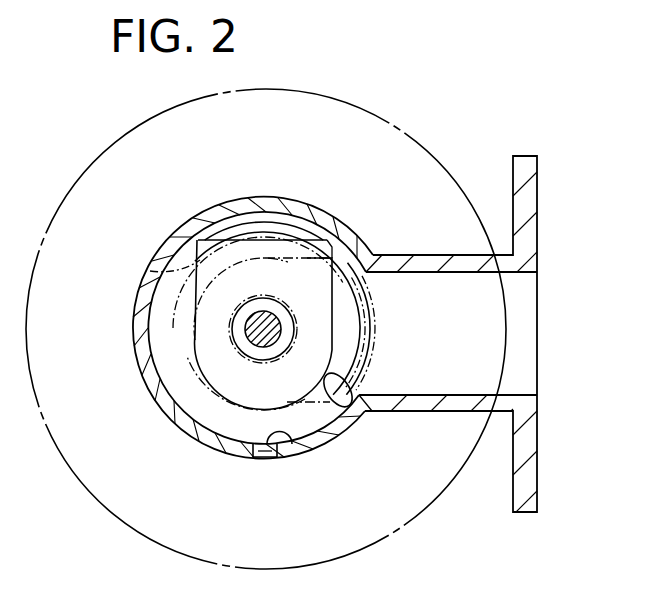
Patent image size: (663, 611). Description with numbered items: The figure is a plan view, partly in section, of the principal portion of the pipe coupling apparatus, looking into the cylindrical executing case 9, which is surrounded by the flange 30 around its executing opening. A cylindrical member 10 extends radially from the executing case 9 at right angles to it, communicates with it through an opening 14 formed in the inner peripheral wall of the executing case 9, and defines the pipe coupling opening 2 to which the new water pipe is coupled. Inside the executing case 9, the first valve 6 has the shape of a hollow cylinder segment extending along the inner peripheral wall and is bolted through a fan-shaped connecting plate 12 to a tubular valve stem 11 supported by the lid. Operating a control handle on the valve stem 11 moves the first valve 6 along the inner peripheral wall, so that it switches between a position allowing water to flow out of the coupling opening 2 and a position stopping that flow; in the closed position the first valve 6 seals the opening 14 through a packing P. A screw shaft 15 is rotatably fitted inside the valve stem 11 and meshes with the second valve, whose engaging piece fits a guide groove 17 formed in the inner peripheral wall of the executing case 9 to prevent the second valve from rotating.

The pipe coupling opening 2 is at (330, 345).
The first valve 6 is at (150, 271).
The executing case 9 is at (140, 327).
The cylindrical member 10 is at (463, 411).
The valve stem 11 is at (236, 339).
The connecting plate 12 is at (207, 345).
The opening 14 is at (380, 306).
The screw shaft 15 is at (262, 338).
The guide groove 17 is at (281, 434).
The flange 30 is at (50, 222).
The packing P is at (253, 222).